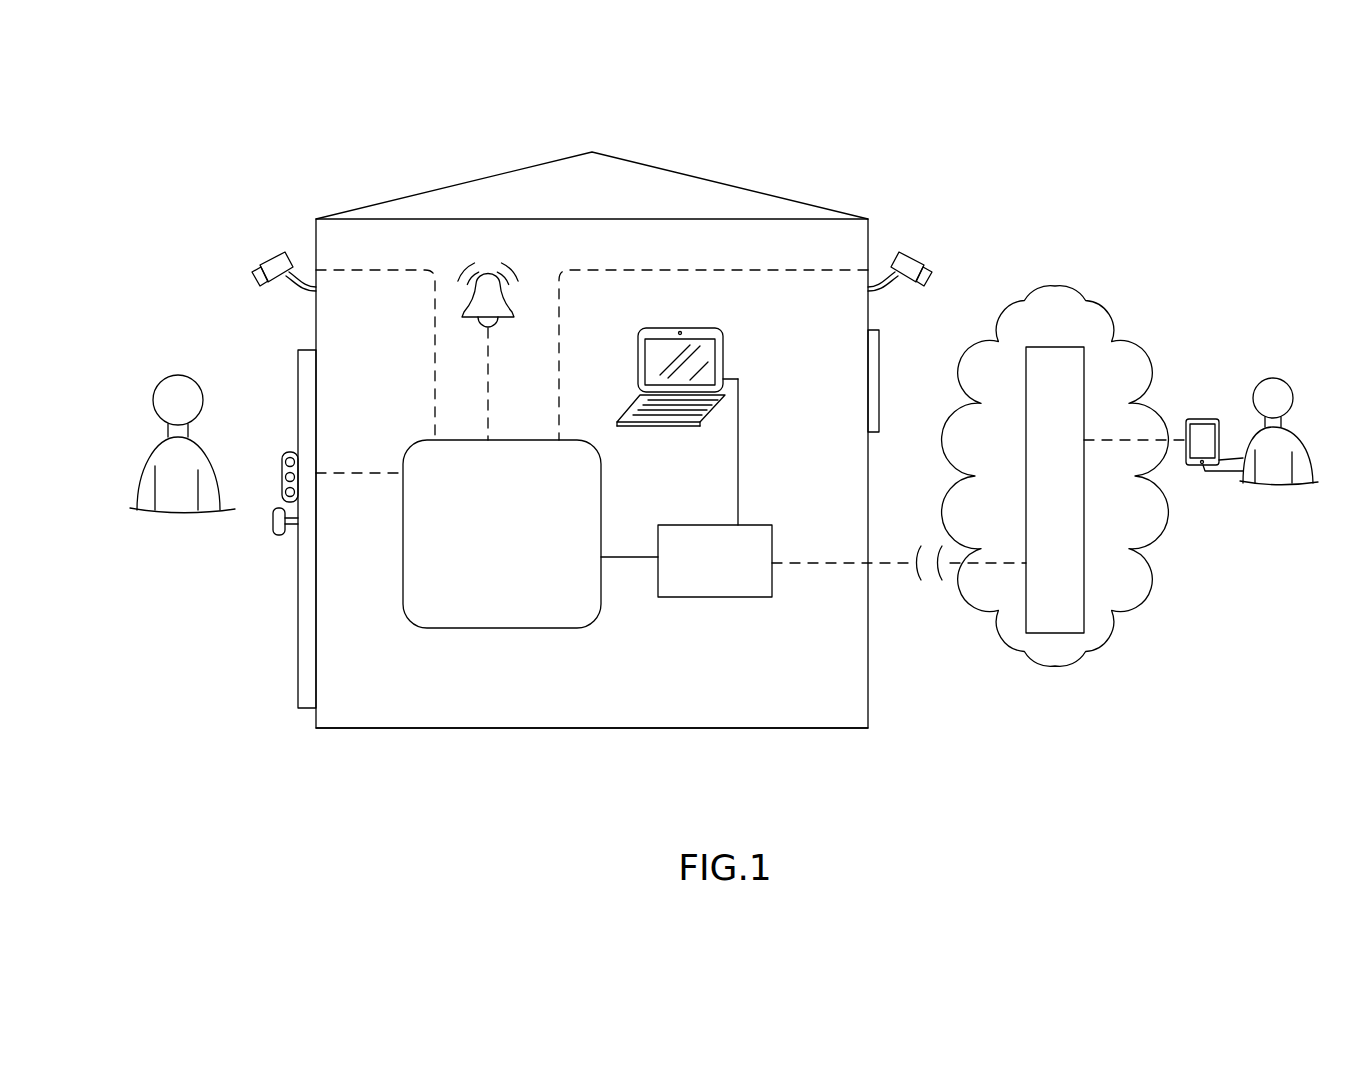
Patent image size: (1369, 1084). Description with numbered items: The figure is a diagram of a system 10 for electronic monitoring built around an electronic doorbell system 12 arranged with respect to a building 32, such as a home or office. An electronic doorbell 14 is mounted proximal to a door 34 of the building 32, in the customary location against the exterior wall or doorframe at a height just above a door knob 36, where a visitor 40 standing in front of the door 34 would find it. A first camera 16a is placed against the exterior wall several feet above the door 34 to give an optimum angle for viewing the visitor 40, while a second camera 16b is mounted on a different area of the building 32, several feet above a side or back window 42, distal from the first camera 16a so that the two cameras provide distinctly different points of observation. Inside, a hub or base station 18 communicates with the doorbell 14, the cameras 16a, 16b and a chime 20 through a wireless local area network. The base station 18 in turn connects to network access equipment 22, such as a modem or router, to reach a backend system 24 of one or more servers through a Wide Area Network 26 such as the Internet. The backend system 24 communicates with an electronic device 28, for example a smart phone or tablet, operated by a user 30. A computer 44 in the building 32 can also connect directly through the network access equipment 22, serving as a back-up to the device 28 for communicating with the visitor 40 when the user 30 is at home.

The system 10 is at (107, 170).
The electronic doorbell system 12 is at (238, 610).
The electronic doorbell 14 is at (281, 470).
The first camera 16a is at (262, 257).
The second camera 16b is at (923, 257).
The base station 18 is at (489, 583).
The chime 20 is at (529, 252).
The network access equipment 22 is at (680, 599).
The backend system 24 is at (1040, 495).
The Wide Area Network 26 is at (1113, 658).
The electronic device 28 is at (1194, 418).
The user 30 is at (1297, 380).
The building 32 is at (382, 729).
The door 34 is at (297, 658).
The door knob 36 is at (272, 537).
The visitor 40 is at (159, 374).
The side or back window 42 is at (880, 413).
The computer 44 is at (724, 340).